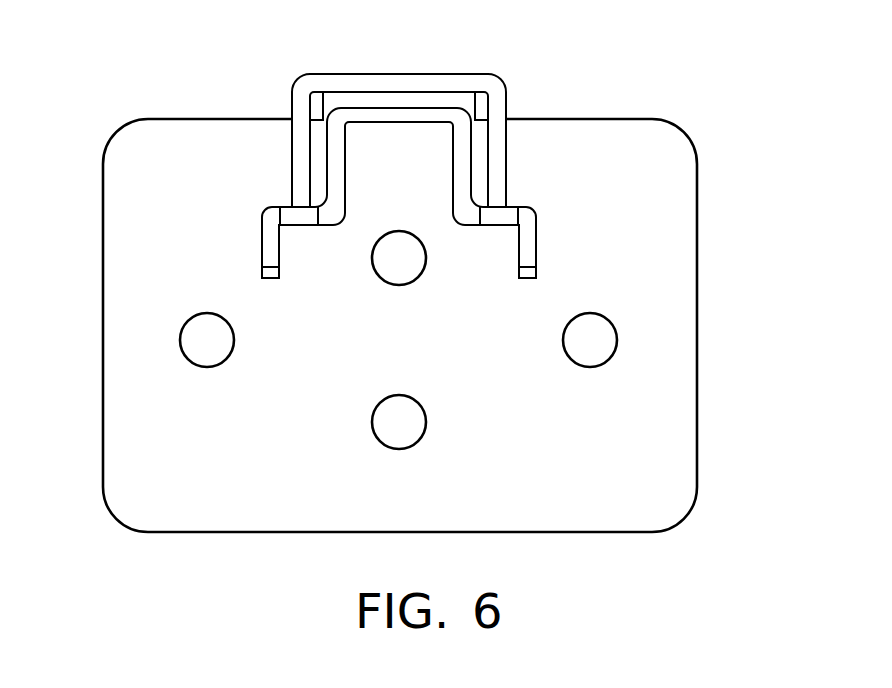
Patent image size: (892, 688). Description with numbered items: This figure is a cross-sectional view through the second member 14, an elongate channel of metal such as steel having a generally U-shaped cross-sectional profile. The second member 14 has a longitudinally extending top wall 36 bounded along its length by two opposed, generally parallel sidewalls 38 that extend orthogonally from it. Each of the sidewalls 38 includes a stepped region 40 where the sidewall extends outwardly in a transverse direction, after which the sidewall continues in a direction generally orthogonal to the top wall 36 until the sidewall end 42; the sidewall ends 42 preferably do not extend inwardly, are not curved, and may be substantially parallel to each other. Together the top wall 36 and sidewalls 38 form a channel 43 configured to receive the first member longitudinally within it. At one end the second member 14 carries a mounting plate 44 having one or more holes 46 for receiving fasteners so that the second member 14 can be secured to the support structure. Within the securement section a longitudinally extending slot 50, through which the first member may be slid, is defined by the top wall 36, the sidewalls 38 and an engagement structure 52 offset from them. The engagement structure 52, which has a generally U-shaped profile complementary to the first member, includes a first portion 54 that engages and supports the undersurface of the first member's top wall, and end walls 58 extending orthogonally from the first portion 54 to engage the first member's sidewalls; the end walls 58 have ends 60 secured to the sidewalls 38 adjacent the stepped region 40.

The second member 14 is at (288, 90).
The top wall 36 is at (388, 72).
The sidewalls 38 is at (290, 160).
The stepped region 40 is at (292, 202).
The sidewall end 42 is at (537, 278).
The channel 43 is at (376, 178).
The mounting plate 44 is at (692, 440).
The holes 46 is at (612, 342).
The slot 50 is at (478, 140).
The engagement structure 52 is at (460, 140).
The first portion 54 is at (378, 127).
The end walls 58 is at (353, 193).
The ends 60 is at (465, 227).